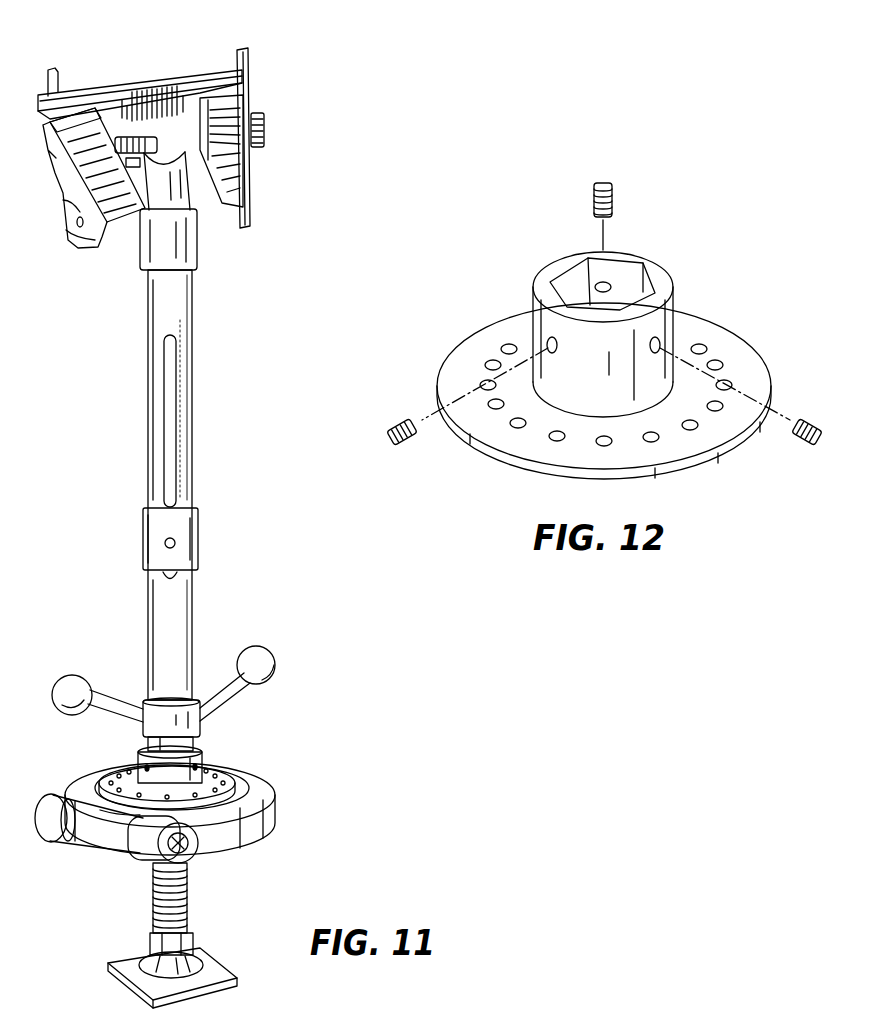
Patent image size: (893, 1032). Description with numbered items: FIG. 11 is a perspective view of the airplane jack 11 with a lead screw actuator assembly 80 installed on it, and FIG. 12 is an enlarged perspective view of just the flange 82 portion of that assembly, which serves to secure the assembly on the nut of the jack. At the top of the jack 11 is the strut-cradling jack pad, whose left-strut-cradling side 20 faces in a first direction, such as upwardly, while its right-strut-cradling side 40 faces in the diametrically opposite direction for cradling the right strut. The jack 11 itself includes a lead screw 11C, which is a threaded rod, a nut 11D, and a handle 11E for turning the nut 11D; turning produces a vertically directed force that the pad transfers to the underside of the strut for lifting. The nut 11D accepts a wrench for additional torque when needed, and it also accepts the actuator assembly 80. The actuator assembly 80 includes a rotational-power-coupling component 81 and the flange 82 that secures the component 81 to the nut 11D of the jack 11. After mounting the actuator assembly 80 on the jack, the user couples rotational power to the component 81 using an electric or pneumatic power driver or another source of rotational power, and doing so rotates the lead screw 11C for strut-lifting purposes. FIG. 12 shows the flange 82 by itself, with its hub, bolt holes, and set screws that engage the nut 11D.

In FIG. 11, the left-strut-cradling side 20 is at (134, 66).
In FIG. 11, the right-strut-cradling side 40 is at (212, 226).
In FIG. 11, the jack 11 is at (142, 372).
In FIG. 11, the handle 11E is at (268, 652).
In FIG. 11, the nut 11D is at (205, 748).
In FIG. 11, the flanged hub 82 is at (118, 770).
In FIG. 12, the flanged hub 82 is at (605, 285).
In FIG. 11, the rotational-power-coupling component 81 is at (72, 795).
In FIG. 11, the actuator assembly 80 is at (229, 794).
In FIG. 11, the lead screw 11C is at (152, 898).